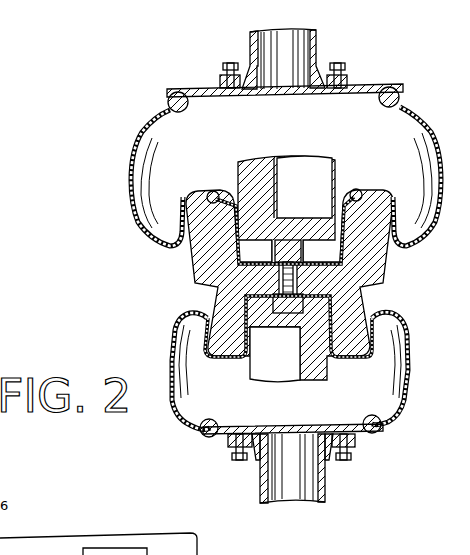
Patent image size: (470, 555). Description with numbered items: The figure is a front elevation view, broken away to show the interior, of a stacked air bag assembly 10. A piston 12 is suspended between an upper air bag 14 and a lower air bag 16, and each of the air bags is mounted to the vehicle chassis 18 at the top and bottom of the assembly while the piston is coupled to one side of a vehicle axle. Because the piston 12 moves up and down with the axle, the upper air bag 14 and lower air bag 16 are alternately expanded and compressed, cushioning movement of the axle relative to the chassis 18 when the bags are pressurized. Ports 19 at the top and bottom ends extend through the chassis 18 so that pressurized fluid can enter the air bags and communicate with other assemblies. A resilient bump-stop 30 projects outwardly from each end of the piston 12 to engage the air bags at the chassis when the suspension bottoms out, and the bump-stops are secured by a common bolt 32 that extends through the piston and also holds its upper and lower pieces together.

The stacked air bag assembly 10 is at (142, 90).
The piston 12 is at (372, 264).
The upper air bag 14 is at (137, 140).
The lower air bag 16 is at (400, 387).
The vehicle chassis 18 is at (250, 43).
The ports 19 is at (283, 33).
The bump-stop 30 is at (197, 263).
The bolt 32 is at (286, 278).